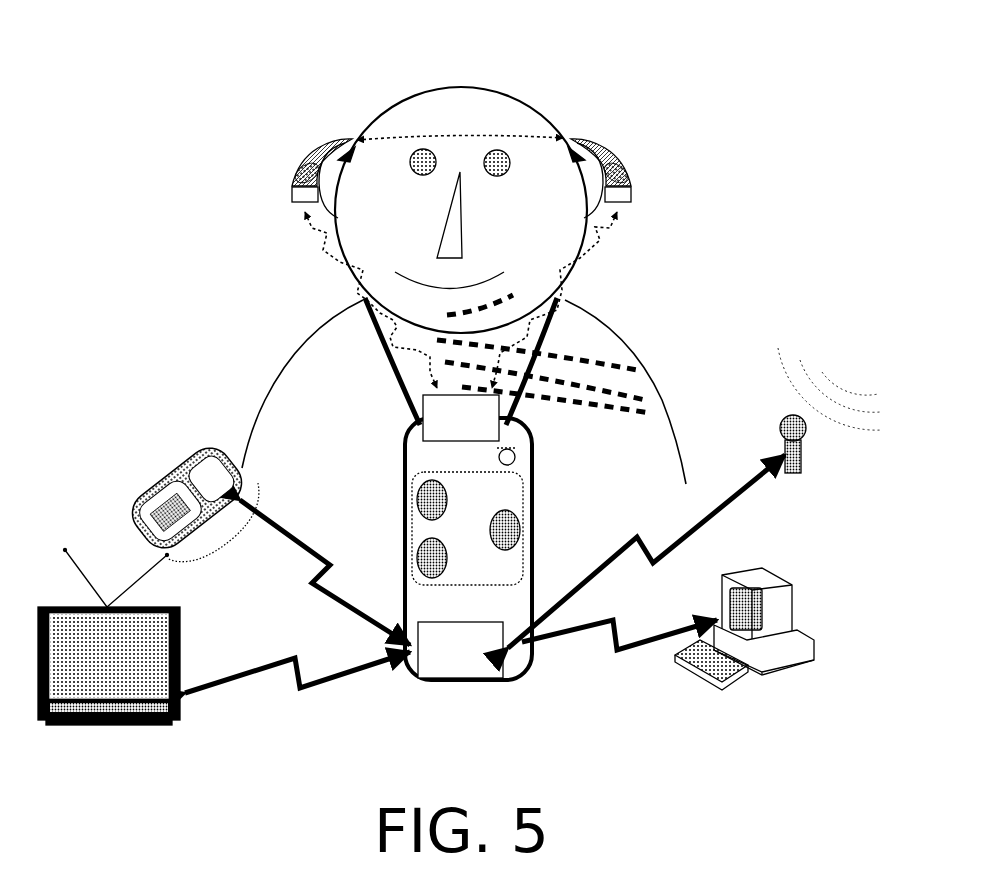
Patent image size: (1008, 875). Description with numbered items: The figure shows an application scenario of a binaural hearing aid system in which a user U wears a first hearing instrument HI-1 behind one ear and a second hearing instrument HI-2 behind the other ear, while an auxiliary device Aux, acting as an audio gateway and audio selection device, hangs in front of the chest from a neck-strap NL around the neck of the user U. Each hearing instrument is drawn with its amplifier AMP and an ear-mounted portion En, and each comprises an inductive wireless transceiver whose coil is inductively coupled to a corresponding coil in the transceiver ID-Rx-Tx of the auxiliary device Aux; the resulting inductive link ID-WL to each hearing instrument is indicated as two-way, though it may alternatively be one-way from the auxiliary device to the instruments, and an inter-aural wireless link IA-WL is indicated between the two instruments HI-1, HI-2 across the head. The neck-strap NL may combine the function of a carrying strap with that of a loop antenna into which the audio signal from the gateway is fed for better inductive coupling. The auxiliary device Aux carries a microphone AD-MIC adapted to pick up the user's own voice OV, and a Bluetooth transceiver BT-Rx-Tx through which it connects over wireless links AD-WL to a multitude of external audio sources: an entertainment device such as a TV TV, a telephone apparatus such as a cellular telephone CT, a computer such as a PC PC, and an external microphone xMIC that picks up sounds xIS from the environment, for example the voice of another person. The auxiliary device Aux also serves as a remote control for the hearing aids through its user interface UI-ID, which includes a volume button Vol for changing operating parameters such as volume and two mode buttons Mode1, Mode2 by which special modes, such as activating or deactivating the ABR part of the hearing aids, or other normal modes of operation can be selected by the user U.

The user U is at (540, 92).
The first hearing instrument HI-1 is at (332, 143).
The second hearing instrument HI-2 is at (596, 146).
The amplifier AMP is at (306, 166).
The ear node / antenna En is at (344, 150).
The inter-aural wireless link IA-WL is at (465, 133).
The inductive link ID-WL is at (325, 238).
The neck-strap NL is at (555, 332).
The user's own voice OV is at (587, 383).
The transceiver of the audio gateway device ID-Rx-Tx is at (461, 417).
The microphone of the audio gateway device AD-MIC is at (516, 455).
The user interface UI-ID is at (512, 493).
The mode button Mode1 is at (420, 497).
The mode button Mode2 is at (428, 563).
The volume button Vol is at (523, 530).
The auxiliary device Aux is at (400, 580).
The Bluetooth transceiver BT-Rx-Tx is at (460, 650).
The wireless links AD-WL is at (282, 748).
The cellular telephone CT is at (165, 472).
The element TV is at (182, 630).
The element PC is at (756, 570).
The external microphone xMIC is at (803, 466).
The sounds from the environment xIS is at (830, 384).